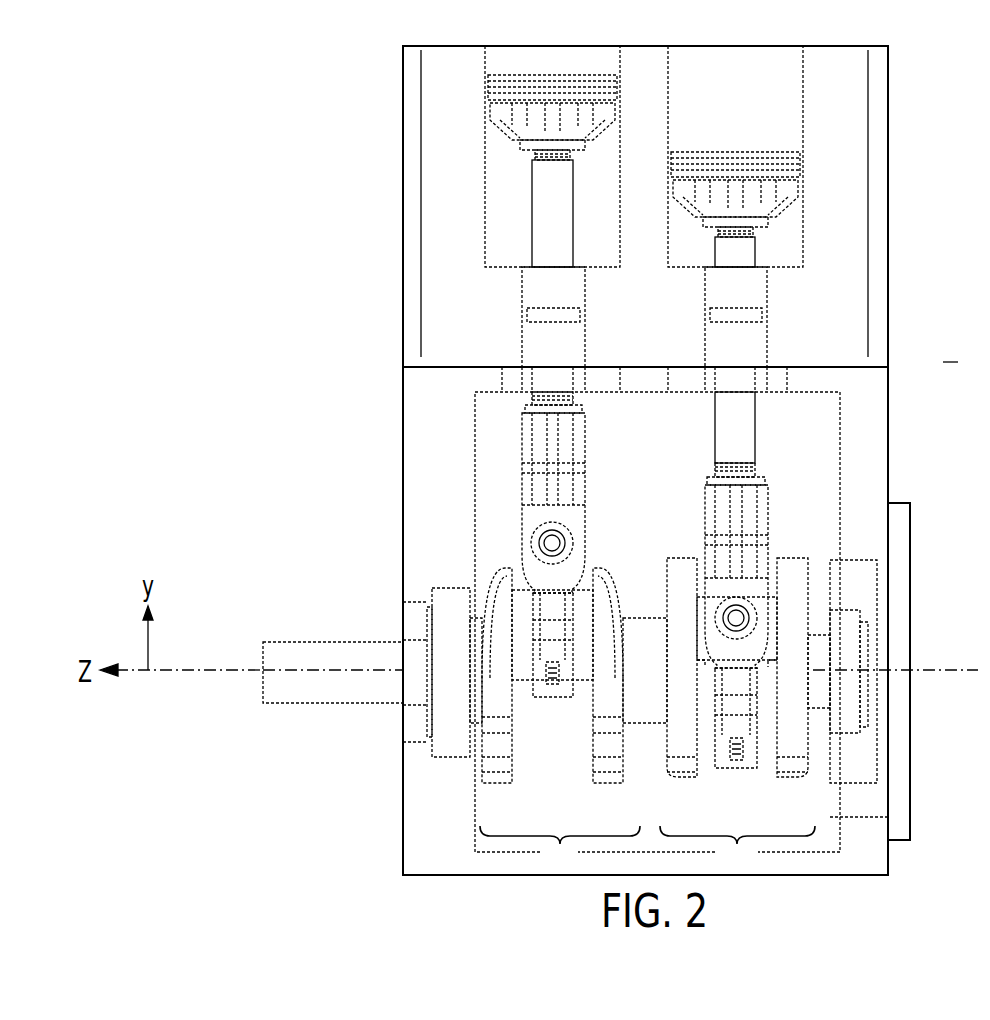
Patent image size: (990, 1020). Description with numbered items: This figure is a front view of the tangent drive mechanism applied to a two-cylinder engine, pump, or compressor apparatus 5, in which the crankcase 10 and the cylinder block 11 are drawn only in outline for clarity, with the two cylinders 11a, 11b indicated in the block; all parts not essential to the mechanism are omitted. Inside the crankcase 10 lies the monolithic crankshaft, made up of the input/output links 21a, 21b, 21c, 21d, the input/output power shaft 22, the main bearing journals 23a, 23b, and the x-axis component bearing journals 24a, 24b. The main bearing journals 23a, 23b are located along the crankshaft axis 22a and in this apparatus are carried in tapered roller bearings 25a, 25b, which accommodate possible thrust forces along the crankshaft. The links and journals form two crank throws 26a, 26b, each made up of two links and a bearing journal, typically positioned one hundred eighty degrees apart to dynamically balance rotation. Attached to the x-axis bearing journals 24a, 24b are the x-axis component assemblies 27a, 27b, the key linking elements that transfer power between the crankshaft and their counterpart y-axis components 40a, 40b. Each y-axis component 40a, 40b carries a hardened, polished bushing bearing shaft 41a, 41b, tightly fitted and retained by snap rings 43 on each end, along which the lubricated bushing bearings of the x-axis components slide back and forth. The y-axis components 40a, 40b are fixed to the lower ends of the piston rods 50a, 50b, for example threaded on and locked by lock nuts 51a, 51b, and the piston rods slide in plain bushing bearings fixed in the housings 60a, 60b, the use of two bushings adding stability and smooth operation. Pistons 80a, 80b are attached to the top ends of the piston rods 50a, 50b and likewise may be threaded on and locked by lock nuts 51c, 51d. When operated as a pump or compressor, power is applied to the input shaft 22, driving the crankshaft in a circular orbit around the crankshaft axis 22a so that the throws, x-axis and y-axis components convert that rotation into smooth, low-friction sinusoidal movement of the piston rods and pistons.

The apparatus 5 is at (950, 347).
The crankcase 10 is at (878, 450).
The cylinder block 11 is at (878, 184).
The cylinder 11a is at (485, 246).
The cylinder 11b is at (803, 211).
The input/output link 21a is at (491, 778).
The input/output link 21b is at (604, 778).
The input/output link 21c is at (686, 558).
The input/output link 21d is at (796, 558).
The input/output power shaft 22 is at (320, 642).
The crankshaft axis 22a is at (213, 678).
The main bearing journal 23a is at (408, 712).
The main bearing journal 23b is at (868, 640).
The x-axis component bearing journal 24a is at (527, 592).
The x-axis component bearing journal 24b is at (710, 744).
The tapered roller bearing 25a is at (447, 758).
The tapered roller bearing 25b is at (850, 733).
The crank throw 26a is at (560, 849).
The crank throw 26b is at (737, 849).
The x-axis component assembly 27a is at (541, 697).
The x-axis component assembly 27b is at (738, 768).
The y-axis component 40a is at (568, 441).
The y-axis component 40b is at (752, 506).
The bushing bearing shaft 41a is at (553, 535).
The bushing bearing shaft 41b is at (750, 614).
The snap ring 43 is at (573, 537).
The piston rod 50a is at (532, 210).
The piston rod 50b is at (745, 431).
The lock nut 51a is at (585, 405).
The lock nut 51b is at (765, 476).
The lock nut 51c is at (588, 145).
The lock nut 51d is at (768, 220).
The housing 60a is at (585, 296).
The housing 60b is at (767, 296).
The piston 80a is at (618, 93).
The piston 80b is at (790, 152).